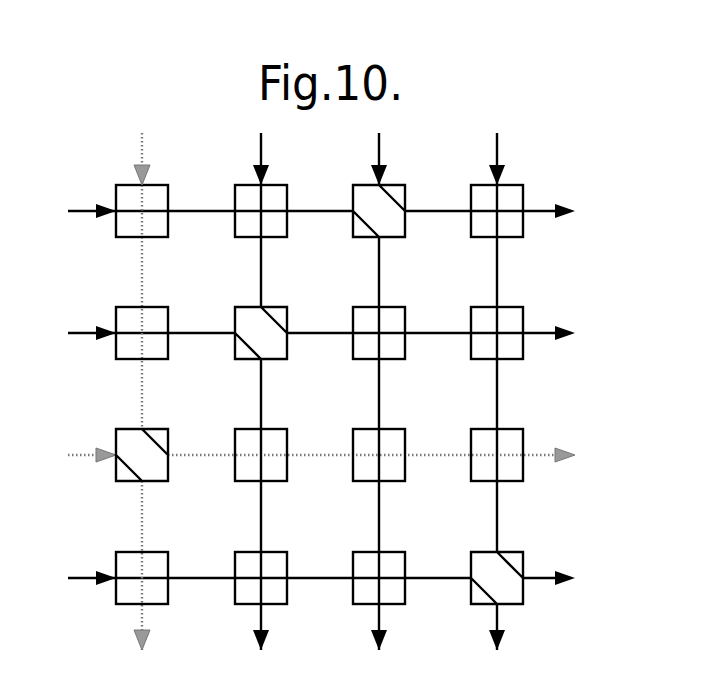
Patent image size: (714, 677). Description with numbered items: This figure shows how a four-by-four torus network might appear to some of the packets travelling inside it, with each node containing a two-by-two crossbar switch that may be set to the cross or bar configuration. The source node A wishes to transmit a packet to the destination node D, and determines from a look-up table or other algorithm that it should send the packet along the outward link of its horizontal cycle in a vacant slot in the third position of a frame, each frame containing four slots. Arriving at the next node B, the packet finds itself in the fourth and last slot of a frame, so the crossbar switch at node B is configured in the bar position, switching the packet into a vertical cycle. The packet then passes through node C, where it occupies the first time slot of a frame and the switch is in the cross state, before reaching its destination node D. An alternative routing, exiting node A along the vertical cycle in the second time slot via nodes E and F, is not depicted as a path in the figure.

The source node A is at (129, 318).
The node B is at (248, 318).
The node C is at (248, 442).
The destination node D is at (248, 563).
The node E is at (129, 442).
The node F is at (129, 563).